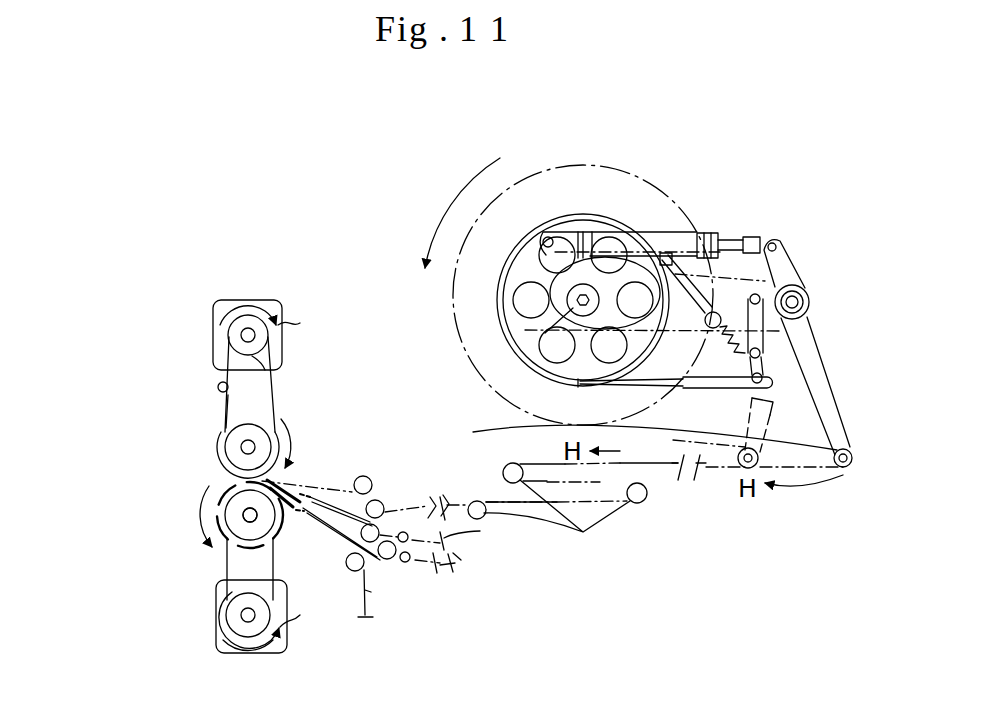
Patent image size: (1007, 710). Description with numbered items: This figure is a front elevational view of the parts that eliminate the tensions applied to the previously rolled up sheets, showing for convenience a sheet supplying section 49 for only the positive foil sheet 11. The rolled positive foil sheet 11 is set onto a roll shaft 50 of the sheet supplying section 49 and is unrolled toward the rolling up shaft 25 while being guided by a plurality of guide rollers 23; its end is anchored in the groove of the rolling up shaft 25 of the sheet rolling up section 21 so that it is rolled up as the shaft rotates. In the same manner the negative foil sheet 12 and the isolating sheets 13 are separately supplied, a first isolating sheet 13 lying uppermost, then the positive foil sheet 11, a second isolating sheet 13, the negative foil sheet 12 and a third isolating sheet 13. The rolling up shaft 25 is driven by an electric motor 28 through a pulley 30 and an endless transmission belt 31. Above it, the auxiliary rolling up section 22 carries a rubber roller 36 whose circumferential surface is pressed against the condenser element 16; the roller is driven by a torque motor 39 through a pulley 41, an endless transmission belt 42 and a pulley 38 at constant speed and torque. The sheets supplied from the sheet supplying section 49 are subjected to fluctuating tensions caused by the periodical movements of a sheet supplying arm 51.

The positive foil sheet 11 is at (450, 508).
The negative foil sheet 12 is at (440, 575).
The isolating sheet 13 is at (380, 479).
The condenser element 16 is at (203, 497).
The sheet rolling up section 21 is at (156, 565).
The auxiliary rolling up section 22 is at (168, 336).
The guide rollers 23 is at (663, 501).
The rolling up shaft 25 is at (256, 519).
The electric motor 28 is at (230, 653).
The pulley 30 is at (227, 595).
The endless transmission belt 31 is at (226, 573).
The rubber roller 36 is at (218, 455).
The pulley 38 is at (226, 424).
The electric motor 39 is at (252, 300).
The pulley 41 is at (262, 371).
The endless transmission belt 42 is at (226, 370).
The sheet supplying section 49 is at (712, 184).
The roll shaft 50 is at (560, 333).
The sheet supplying arm 51 is at (815, 336).